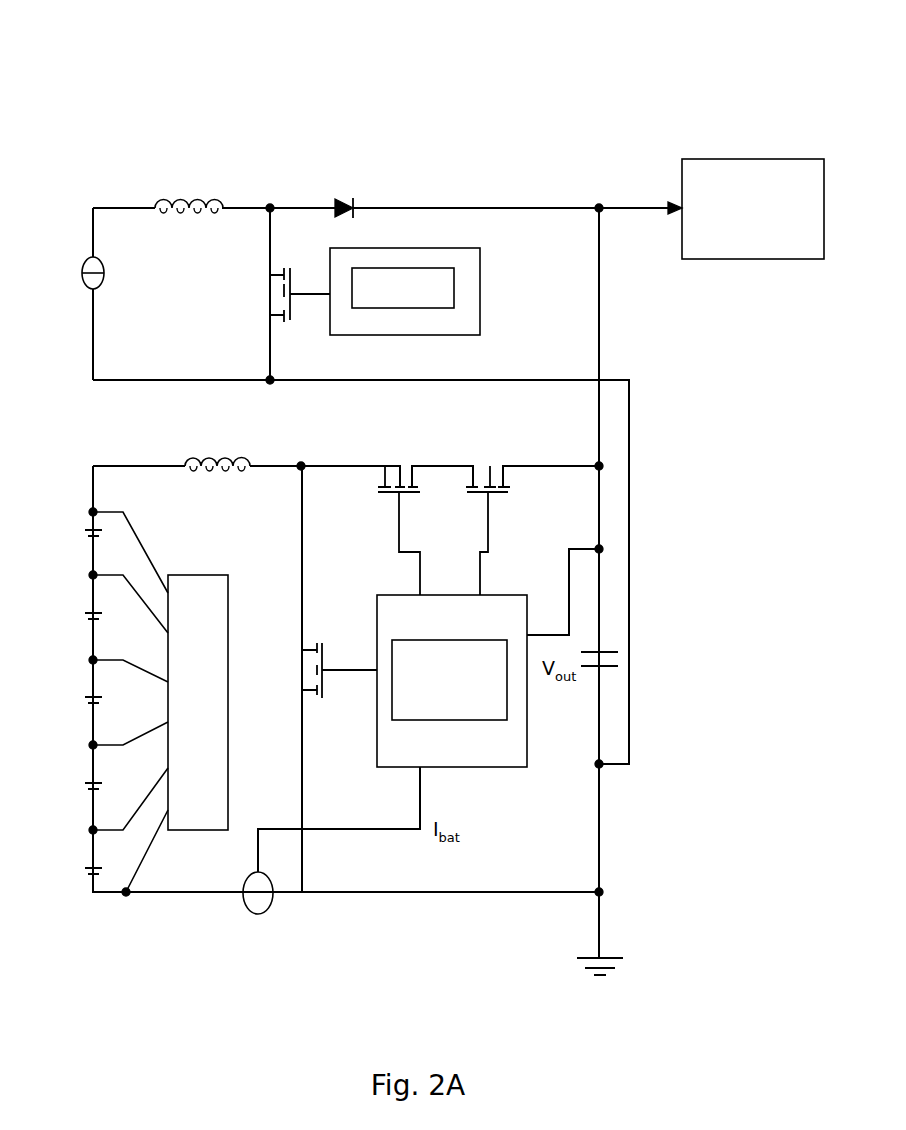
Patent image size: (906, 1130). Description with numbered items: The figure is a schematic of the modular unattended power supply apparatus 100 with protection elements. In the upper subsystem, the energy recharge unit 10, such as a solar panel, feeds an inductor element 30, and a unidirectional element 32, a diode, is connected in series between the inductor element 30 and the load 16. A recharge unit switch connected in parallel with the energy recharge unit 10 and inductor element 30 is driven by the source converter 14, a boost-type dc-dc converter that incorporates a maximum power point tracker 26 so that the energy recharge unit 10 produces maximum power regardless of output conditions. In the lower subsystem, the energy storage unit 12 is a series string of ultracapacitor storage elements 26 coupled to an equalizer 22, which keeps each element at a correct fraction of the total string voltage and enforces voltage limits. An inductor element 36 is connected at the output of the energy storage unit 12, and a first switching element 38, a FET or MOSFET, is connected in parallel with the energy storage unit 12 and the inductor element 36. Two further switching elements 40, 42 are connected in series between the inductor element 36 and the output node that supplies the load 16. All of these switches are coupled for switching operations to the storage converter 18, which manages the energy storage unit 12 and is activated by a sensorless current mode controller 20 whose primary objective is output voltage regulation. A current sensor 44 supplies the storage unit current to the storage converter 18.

The power supply apparatus 100 is at (256, 115).
The energy recharge unit 10 is at (104, 273).
The inductor element 30 is at (181, 218).
The unidirectional element 32 is at (335, 198).
The maximum power point tracker 26 is at (454, 272).
The source converter 14 is at (280, 557).
The load 16 is at (760, 259).
The inductor element 36 is at (210, 480).
The switching element q2 40 is at (385, 465).
The switching element q3 42 is at (490, 465).
The switching element q1 38 is at (312, 695).
The equalizer 22 is at (228, 780).
The storage converter 18 is at (473, 715).
The sensorless current mode controller 20 is at (445, 720).
The current sensor 44 is at (258, 914).
The energy storage unit 12 is at (81, 900).